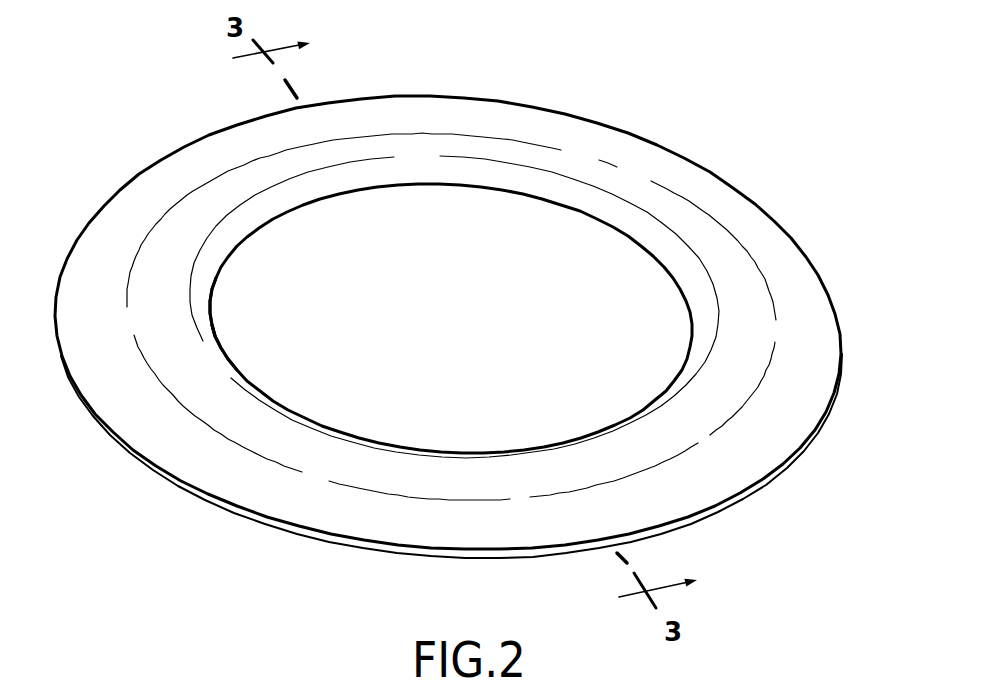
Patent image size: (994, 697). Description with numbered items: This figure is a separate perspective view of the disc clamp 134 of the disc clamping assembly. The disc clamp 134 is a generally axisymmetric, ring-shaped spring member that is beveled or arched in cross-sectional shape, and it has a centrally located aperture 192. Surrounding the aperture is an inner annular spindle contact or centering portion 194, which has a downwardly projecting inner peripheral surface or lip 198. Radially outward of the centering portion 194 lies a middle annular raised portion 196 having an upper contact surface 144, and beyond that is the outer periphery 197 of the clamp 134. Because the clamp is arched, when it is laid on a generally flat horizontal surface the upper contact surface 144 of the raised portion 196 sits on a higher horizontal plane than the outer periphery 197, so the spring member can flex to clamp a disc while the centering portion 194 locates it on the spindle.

The disc clamp 134 is at (672, 117).
The aperture 192 is at (533, 223).
The centering portion 194 is at (219, 273).
The middle annular raised portion 196 is at (670, 199).
The outer periphery 197 is at (818, 294).
The upper contact surface 144 is at (710, 268).
The lip 198 is at (215, 312).